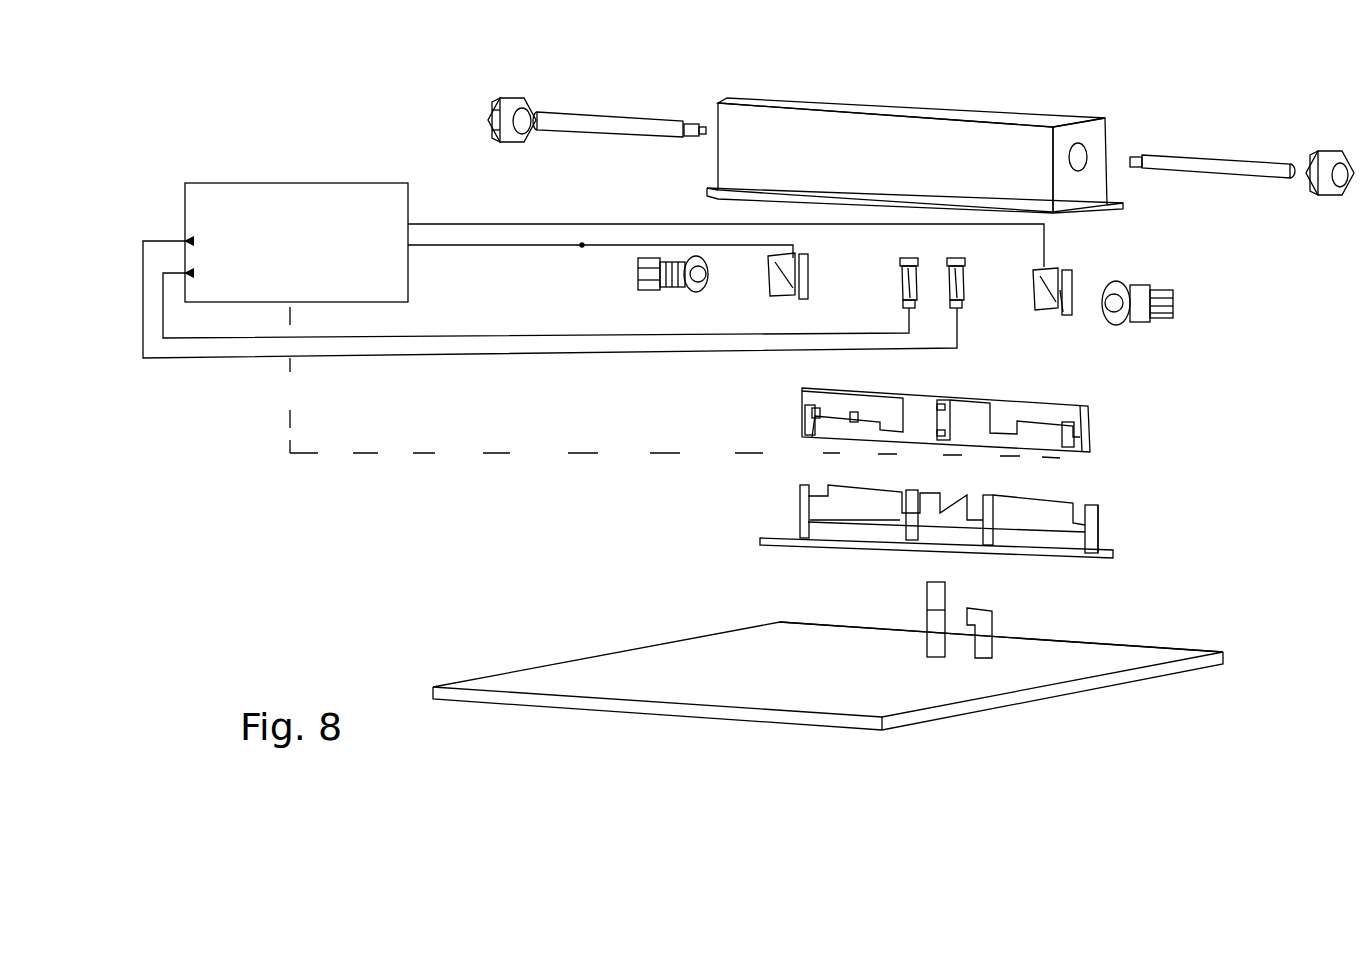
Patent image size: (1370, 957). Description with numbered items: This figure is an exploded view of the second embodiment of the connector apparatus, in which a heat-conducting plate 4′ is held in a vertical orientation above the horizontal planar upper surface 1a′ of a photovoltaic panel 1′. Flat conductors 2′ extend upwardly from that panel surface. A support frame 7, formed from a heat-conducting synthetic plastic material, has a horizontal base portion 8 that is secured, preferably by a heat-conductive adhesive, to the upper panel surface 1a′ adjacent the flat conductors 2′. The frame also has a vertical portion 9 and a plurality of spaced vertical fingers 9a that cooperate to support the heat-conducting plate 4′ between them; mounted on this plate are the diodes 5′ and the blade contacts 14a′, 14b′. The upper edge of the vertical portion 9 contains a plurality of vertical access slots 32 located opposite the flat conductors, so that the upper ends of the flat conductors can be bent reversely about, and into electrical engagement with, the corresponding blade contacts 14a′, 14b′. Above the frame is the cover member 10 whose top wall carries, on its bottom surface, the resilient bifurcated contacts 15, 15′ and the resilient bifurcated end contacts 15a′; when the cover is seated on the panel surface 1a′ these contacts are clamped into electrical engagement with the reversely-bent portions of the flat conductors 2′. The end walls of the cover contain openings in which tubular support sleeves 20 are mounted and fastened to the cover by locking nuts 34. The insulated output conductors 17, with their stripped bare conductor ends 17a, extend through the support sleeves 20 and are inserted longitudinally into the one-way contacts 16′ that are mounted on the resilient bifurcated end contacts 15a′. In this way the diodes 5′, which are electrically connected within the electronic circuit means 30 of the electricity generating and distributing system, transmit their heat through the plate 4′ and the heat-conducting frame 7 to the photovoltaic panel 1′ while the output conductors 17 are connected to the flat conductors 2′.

The electronic circuit means 30 is at (288, 185).
The locking nut 34 is at (500, 106).
The insulated output conductor 17 is at (607, 115).
The bolt tip 17a is at (1157, 120).
The housing 10 is at (918, 108).
The tubular support sleeve 20 is at (636, 270).
The one-way contact 16′ is at (775, 272).
The contact 15 is at (900, 275).
The resilient bifurcated contact 15′ is at (966, 268).
The resilient bifurcated end contact 15a′ is at (1063, 316).
The heat-conducting plate 4′ is at (1065, 412).
The blade contact 14a′ is at (915, 412).
The blade contact 14b′ is at (968, 408).
The diode 5′ is at (812, 418).
The vertical portion 9 is at (1052, 515).
The vertical fingers 9a is at (905, 520).
The vertical access slot 32 is at (805, 497).
The horizontal base portion 8 is at (1115, 557).
The support frame 7 is at (1105, 540).
The flat conductor 2′ is at (995, 628).
The photovoltaic panel 1′ is at (1050, 697).
The planar upper surface 1a′ is at (1108, 660).